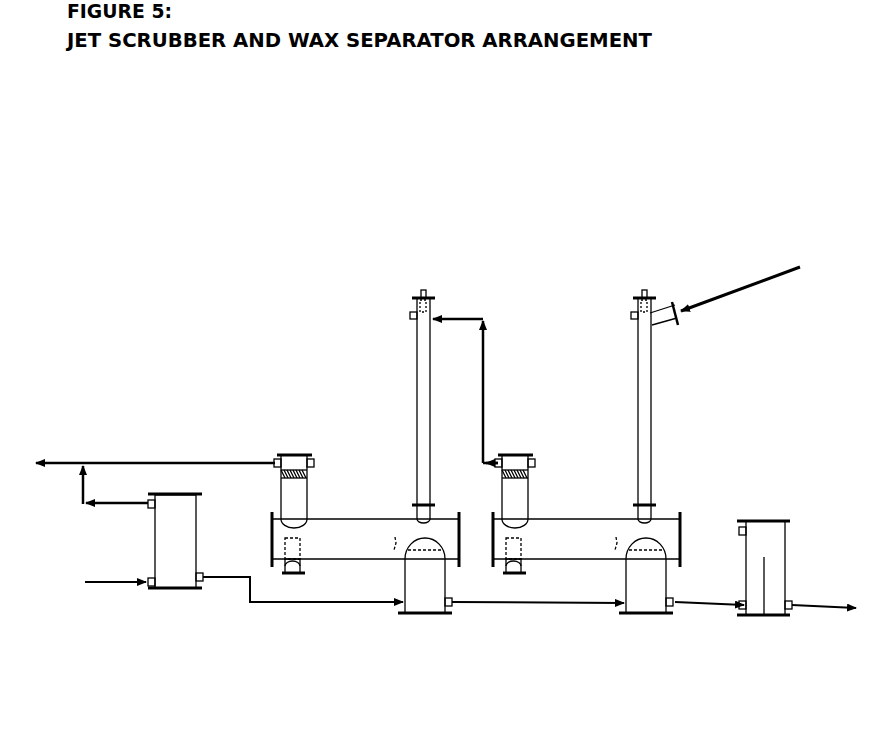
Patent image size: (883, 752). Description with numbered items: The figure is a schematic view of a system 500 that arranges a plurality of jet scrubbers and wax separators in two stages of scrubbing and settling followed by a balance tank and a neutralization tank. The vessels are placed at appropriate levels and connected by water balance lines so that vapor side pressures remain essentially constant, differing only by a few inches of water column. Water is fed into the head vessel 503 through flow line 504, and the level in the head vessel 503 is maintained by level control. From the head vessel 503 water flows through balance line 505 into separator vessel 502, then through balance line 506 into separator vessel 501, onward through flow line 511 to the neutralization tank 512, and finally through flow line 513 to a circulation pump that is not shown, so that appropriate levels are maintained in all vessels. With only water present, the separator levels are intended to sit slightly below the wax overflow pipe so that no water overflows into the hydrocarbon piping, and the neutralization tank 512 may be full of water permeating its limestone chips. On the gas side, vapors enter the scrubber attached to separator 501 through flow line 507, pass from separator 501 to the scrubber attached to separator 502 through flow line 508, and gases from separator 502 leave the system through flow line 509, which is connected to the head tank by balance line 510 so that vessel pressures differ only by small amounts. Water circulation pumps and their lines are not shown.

The system 500 is at (439, 462).
The separator vessel 501 is at (585, 547).
The separator vessel 502 is at (358, 542).
The head vessel 503 is at (176, 521).
The flow line 504 is at (118, 585).
The balance line 505 is at (250, 588).
The balance line 506 is at (523, 607).
The flow line 507 is at (710, 304).
The flow line 508 is at (488, 372).
The flow line 509 is at (217, 458).
The balance line 510 is at (79, 497).
The flow line 511 is at (721, 609).
The neutralization tank 512 is at (773, 592).
The flow line 513 is at (809, 599).